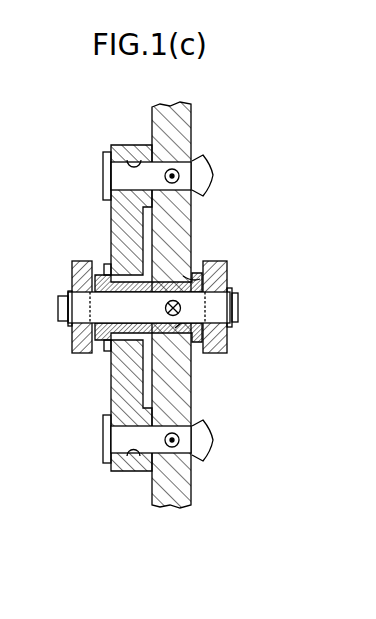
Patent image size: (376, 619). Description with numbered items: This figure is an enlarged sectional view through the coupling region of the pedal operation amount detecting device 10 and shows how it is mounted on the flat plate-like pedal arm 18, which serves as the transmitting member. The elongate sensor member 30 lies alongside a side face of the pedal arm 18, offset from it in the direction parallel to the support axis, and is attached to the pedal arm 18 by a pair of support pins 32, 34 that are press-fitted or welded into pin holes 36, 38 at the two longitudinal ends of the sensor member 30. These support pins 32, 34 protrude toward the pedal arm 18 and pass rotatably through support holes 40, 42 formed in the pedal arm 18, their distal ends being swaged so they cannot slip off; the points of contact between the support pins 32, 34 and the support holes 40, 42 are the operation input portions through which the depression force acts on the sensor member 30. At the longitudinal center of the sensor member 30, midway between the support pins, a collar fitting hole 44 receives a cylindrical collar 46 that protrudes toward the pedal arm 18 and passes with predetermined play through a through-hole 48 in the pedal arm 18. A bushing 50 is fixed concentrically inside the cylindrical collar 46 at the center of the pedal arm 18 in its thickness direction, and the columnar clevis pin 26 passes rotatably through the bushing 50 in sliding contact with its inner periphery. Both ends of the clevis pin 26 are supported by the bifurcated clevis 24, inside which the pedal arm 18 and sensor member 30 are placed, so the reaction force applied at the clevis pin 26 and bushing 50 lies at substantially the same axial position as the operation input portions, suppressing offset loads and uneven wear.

The pedal operation amount detecting device 10 is at (58, 146).
The pedal arm 18 is at (172, 131).
The clevis 24 is at (81, 350).
The clevis pin 26 is at (82, 310).
The sensor member 30 is at (127, 222).
The support pin 32 is at (128, 177).
The support pin 34 is at (127, 442).
The pin hole 36 is at (129, 158).
The pin hole 38 is at (138, 458).
The support hole 40 is at (216, 173).
The support hole 42 is at (216, 440).
The collar fitting hole 44 is at (108, 286).
The cylindrical collar 46 is at (163, 340).
The through-hole 48 is at (207, 272).
The bushing 50 is at (232, 308).